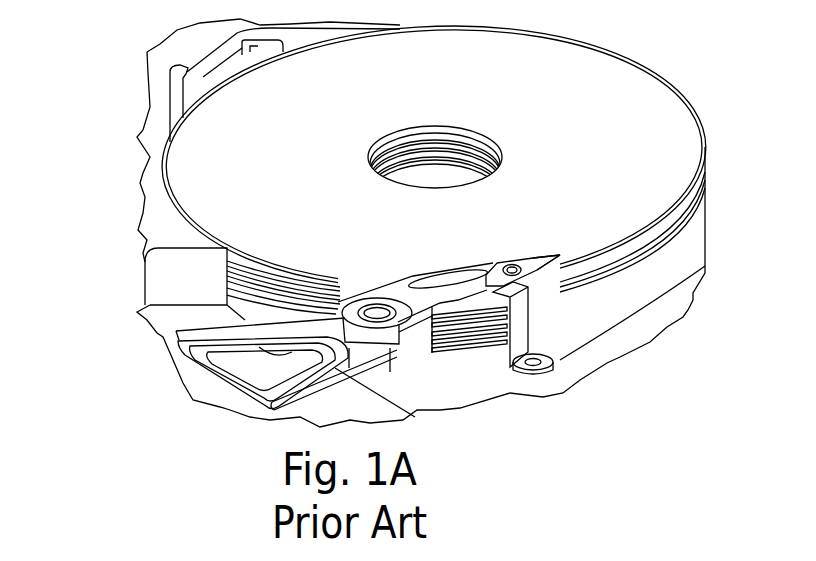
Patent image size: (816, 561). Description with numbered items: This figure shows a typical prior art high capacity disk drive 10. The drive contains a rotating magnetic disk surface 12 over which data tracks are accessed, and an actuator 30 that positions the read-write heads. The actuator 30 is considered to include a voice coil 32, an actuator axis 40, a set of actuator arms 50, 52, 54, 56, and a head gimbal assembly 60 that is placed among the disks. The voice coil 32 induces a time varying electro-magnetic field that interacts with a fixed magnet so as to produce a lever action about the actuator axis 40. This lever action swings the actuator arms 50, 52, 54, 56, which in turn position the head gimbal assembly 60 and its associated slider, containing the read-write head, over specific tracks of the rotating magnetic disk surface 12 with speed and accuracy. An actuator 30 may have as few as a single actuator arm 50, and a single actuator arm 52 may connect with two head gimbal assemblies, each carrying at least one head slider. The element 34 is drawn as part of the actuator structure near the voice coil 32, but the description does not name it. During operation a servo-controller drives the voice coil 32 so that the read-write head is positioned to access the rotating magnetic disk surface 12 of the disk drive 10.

The high capacity disk drive 10 is at (132, 20).
The rotating magnetic disk surface 12 is at (627, 92).
The actuator 30 is at (410, 363).
The voice coil 32 is at (245, 392).
The coil support rod 34 is at (330, 373).
The actuator axis 40 is at (372, 306).
The actuator arm 50 is at (493, 272).
The actuator arm 52 is at (453, 312).
The actuator arm 54 is at (460, 317).
The actuator arm 56 is at (448, 330).
The head gimbal assembly 60 is at (558, 254).